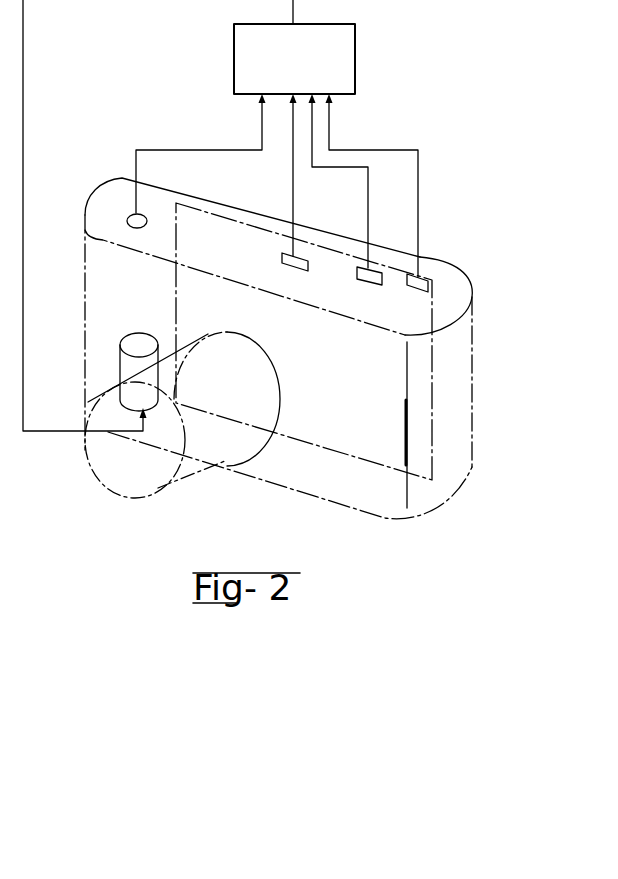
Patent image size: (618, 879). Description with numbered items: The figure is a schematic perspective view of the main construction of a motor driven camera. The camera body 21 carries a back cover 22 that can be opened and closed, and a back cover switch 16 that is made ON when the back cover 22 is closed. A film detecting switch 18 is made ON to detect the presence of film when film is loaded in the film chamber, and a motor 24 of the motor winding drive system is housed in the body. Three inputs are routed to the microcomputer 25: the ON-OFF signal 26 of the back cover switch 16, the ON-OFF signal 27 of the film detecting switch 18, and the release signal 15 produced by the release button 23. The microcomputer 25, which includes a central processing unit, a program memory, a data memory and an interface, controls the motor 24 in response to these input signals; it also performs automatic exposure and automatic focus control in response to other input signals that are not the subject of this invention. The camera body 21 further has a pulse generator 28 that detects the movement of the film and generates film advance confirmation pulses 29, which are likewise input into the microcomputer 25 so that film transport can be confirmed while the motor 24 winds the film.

The release signal 15 is at (226, 150).
The back cover switch 16 is at (427, 285).
The film detecting switch 18 is at (284, 263).
The camera body 21 is at (455, 397).
The back cover 22 is at (310, 243).
The release button 23 is at (110, 215).
The motor 24 is at (128, 334).
The microcomputer 25 is at (357, 57).
The ON-OFF signal of the back cover switch 26 is at (408, 149).
The ON-OFF signal of the film detecting switch 27 is at (293, 188).
The pulse generator 28 is at (373, 275).
The film advance confirmation pulses 29 is at (366, 167).